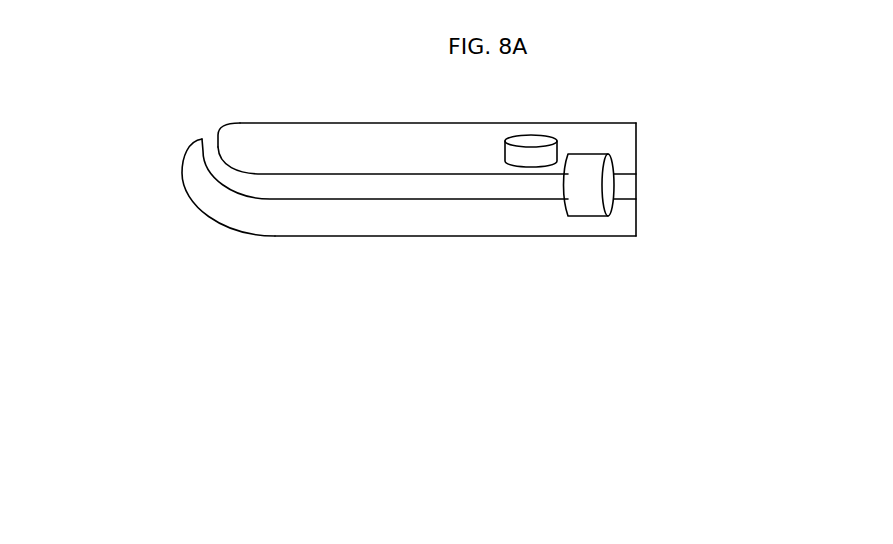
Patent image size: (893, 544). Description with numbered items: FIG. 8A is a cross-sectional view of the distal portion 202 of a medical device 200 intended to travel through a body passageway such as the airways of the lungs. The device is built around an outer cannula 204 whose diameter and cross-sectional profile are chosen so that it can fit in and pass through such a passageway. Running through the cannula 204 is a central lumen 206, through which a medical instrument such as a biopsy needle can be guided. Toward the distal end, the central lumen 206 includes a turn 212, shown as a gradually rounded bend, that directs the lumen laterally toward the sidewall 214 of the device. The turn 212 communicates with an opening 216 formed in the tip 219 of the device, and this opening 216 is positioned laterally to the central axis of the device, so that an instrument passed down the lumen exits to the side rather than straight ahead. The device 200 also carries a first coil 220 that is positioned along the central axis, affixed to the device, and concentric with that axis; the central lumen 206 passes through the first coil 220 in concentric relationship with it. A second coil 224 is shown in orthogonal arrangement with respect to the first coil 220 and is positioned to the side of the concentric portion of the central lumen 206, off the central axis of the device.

The medical device 200 is at (396, 319).
The distal portion 202 is at (370, 119).
The outer cannula 204 is at (518, 268).
The central lumen 206 is at (668, 190).
The turn 212 is at (228, 215).
The sidewall 214 is at (311, 251).
The opening 216 is at (172, 106).
The tip 219 is at (144, 173).
The first coil 220 is at (597, 212).
The second coil 224 is at (567, 142).